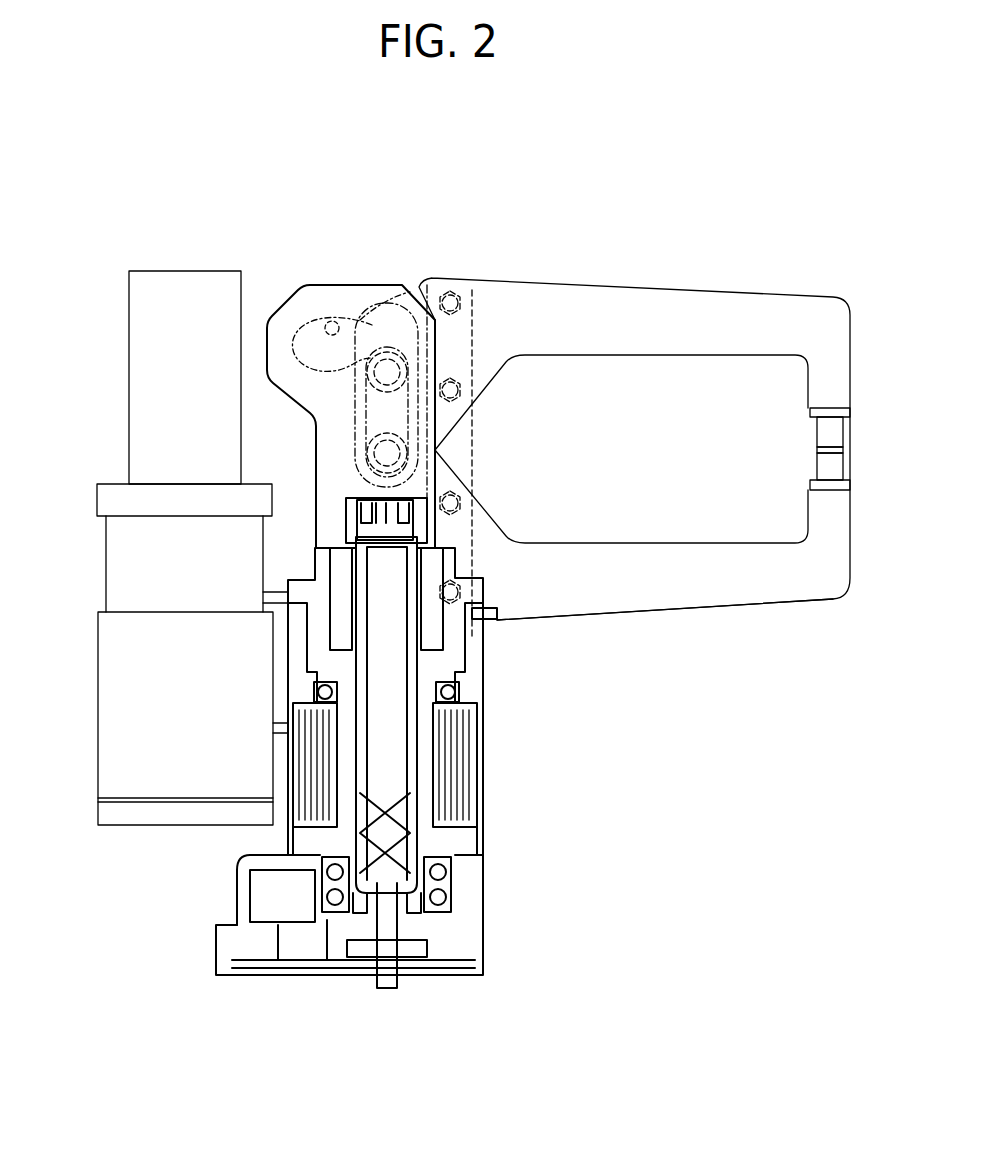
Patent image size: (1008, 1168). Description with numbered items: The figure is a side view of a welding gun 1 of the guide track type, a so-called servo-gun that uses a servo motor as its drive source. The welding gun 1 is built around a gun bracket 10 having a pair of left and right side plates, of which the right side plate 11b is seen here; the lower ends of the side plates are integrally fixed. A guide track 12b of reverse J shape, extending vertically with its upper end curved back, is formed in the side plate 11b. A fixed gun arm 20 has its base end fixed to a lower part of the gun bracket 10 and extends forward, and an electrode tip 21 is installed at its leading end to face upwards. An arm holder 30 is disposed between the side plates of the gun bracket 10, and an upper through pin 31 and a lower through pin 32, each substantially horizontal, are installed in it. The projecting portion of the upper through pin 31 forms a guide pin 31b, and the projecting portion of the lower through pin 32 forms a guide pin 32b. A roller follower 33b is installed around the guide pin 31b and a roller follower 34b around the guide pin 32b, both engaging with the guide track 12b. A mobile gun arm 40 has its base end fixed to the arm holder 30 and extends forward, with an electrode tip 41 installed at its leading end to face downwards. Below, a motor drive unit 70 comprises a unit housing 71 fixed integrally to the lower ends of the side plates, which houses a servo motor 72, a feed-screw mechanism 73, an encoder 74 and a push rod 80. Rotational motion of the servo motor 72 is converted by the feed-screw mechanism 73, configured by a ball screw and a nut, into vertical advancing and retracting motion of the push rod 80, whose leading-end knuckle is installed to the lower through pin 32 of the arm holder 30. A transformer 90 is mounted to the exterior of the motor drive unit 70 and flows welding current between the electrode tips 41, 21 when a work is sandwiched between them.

The welding gun 1 is at (560, 180).
The gun bracket 10 is at (351, 437).
The side plate 11b is at (297, 313).
The guide track 12b is at (335, 322).
The fixed gun arm 20 is at (720, 596).
The electrode tip 21 is at (836, 469).
The arm holder 30 is at (355, 432).
The through pin 31 is at (489, 376).
The guide pin 31b is at (387, 372).
The through pin 32 is at (489, 481).
The guide pin 32b is at (390, 455).
The roller follower 33b is at (398, 393).
The roller follower 34b is at (403, 440).
The mobile gun arm 40 is at (719, 291).
The electrode tip 41 is at (836, 431).
The motor drive unit 70 is at (379, 743).
The unit housing 71 is at (478, 947).
The servo motor 72 is at (478, 783).
The feed-screw mechanism 73 is at (387, 750).
The encoder 74 is at (265, 893).
The push rod 80 is at (410, 657).
The transformer 90 is at (107, 714).